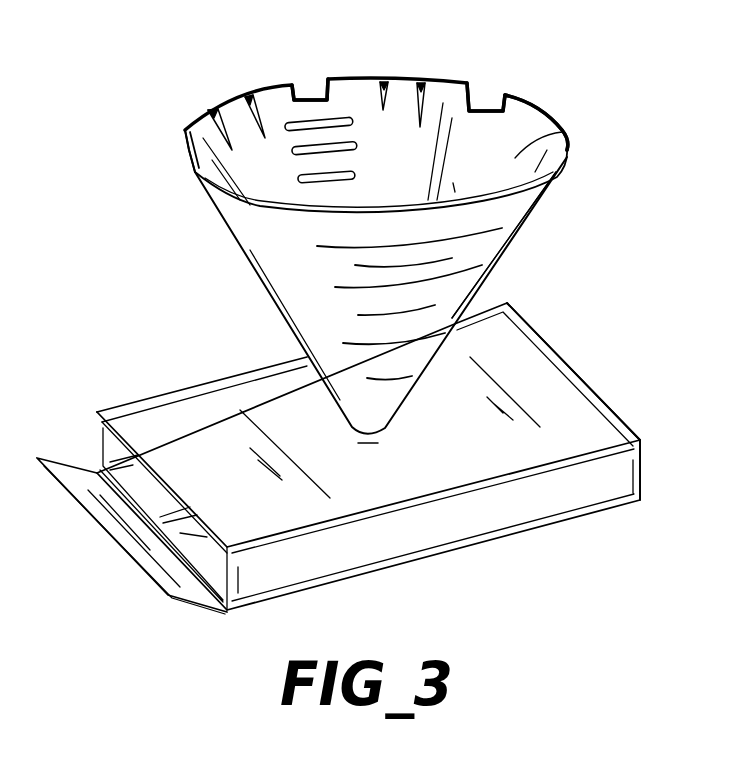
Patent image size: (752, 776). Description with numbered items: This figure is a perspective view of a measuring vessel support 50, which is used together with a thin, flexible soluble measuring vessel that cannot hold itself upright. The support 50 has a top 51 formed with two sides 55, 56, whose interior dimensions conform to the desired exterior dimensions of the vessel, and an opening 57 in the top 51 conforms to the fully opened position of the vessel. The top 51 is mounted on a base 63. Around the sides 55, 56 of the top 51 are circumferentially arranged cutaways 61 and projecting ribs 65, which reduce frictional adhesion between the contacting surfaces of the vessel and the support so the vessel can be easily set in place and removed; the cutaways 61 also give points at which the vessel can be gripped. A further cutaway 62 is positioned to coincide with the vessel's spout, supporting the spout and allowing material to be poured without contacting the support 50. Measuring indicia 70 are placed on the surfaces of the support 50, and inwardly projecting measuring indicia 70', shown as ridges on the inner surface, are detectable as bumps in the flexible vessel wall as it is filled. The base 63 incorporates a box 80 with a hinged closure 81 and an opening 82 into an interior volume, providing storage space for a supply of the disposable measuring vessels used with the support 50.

The measuring vessel support 50 is at (607, 550).
The top 51 is at (490, 275).
The side 55 is at (507, 130).
The side 56 is at (497, 213).
The opening 57 is at (560, 130).
The cutaways 61 is at (303, 92).
The cutaway 62 is at (190, 163).
The base 63 is at (628, 412).
The projecting ribs 65 is at (388, 105).
The measuring indicia 70 is at (345, 304).
The inwardly projecting measuring indicia 70' is at (321, 100).
The box 80 is at (480, 507).
The hinged closure 81 is at (110, 540).
The opening 82 is at (108, 452).